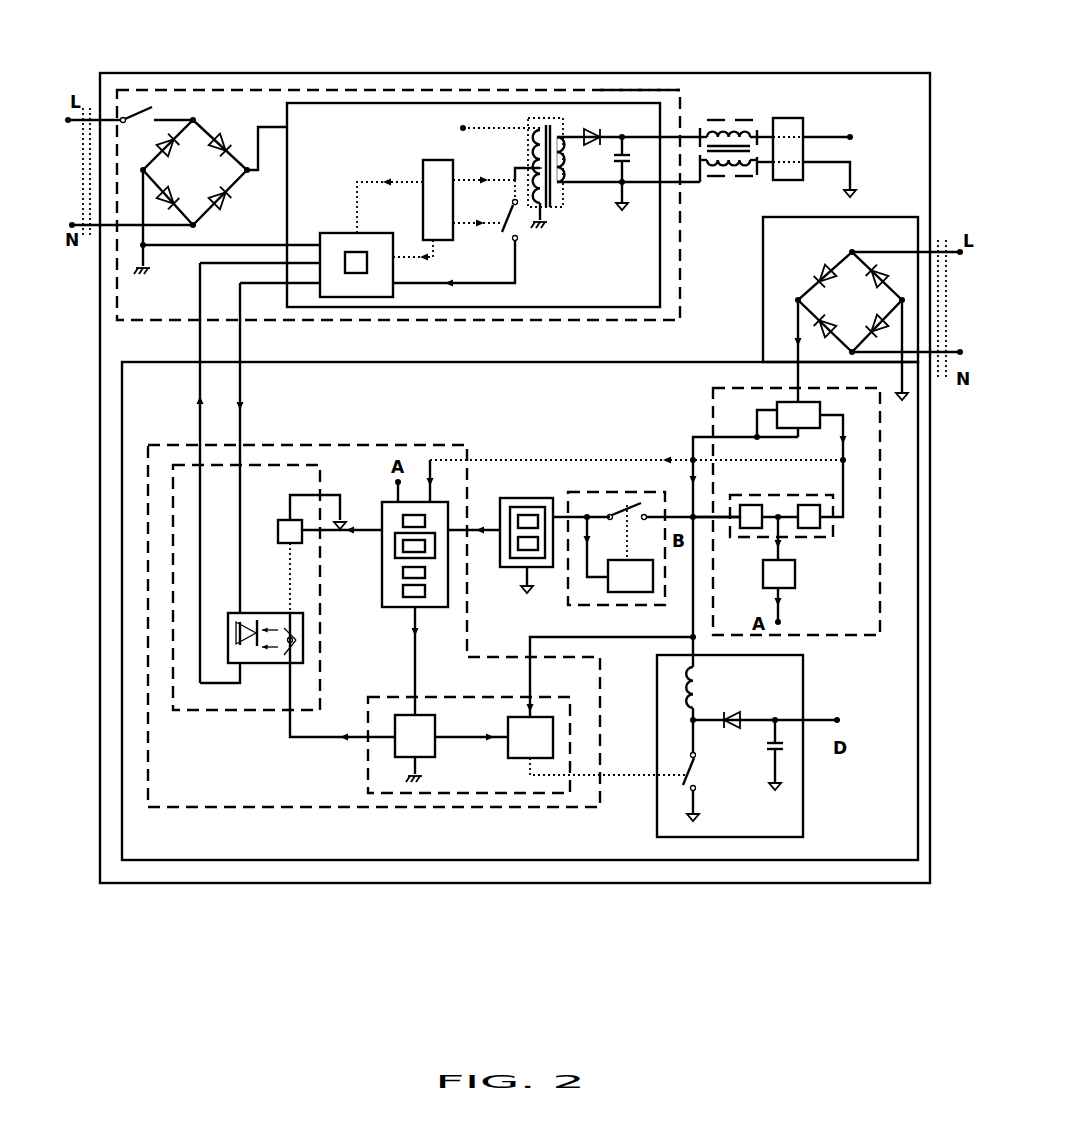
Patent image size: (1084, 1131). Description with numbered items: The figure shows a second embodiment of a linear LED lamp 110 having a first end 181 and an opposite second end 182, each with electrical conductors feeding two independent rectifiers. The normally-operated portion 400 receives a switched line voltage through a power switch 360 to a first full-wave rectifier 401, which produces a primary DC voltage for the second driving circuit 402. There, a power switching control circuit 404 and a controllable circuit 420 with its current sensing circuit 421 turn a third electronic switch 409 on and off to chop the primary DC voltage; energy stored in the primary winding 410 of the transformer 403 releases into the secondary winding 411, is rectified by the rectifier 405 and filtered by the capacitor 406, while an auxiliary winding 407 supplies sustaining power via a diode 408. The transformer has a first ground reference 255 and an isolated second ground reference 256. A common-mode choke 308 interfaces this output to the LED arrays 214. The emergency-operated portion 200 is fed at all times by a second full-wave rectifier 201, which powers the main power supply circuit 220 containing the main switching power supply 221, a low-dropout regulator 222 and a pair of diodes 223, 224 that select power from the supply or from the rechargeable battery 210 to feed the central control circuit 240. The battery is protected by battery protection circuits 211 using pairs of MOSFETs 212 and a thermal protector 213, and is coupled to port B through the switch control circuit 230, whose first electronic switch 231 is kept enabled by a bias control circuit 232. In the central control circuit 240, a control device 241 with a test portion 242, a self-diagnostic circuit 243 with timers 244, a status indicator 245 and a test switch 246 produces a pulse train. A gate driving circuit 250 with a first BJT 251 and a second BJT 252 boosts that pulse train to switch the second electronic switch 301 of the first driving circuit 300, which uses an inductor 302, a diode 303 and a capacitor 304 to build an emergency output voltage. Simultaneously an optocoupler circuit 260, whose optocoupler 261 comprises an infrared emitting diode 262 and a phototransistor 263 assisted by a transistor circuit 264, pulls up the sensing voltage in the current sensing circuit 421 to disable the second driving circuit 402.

The linear LED lamp 110 is at (449, 70).
The first end 181 is at (92, 238).
The second end 182 is at (942, 238).
The emergency-operated portion 200 is at (684, 358).
The second full-wave rectifier 201 is at (858, 246).
The rechargeable battery 210 is at (520, 496).
The battery protection circuits 211 is at (518, 550).
The pairs of MOSFETs 212 is at (538, 507).
The thermal protector 213 is at (532, 556).
The LED arrays 214 is at (804, 118).
The main power supply circuit 220 is at (752, 384).
The main switching power supply 221 is at (822, 402).
The low-dropout regulator 222 is at (797, 590).
The diode 223 is at (815, 530).
The diode 224 is at (748, 504).
The switch control circuit 230 is at (638, 488).
The first electronic switch 231 is at (625, 508).
The bias control circuit 232 is at (612, 594).
The central control circuit 240 is at (362, 443).
The control device 241 is at (388, 606).
The test portion 242 is at (402, 524).
The self-diagnostic circuit 243 is at (398, 548).
The timers 244 is at (418, 596).
The status indicator 245 is at (404, 576).
The test switch 246 is at (414, 640).
The gate driving circuit 250 is at (366, 796).
The first at least one BJT 251 is at (530, 715).
The second at least one BJT 252 is at (430, 714).
The first ground reference 255 is at (145, 272).
The second ground reference 256 is at (625, 212).
The optocoupler circuit 260 is at (186, 714).
The optocoupler 261 is at (262, 668).
The infrared emitting diode 262 is at (298, 648).
The phototransistor 263 is at (250, 612).
The transistor circuit 264 is at (280, 520).
The first driving circuit 300 is at (808, 818).
The second electronic switch 301 is at (684, 782).
The inductor 302 is at (697, 686).
The diode 303 is at (734, 728).
The capacitor 304 is at (782, 748).
The common-mode choke 308 is at (722, 118).
The power switch 360 is at (135, 108).
The normally-operated portion 400 is at (272, 88).
The first full-wave rectifier 401 is at (190, 116).
The second driving circuit 402 is at (643, 92).
The transformer 403 is at (549, 118).
The power switching control circuit 404 is at (437, 158).
The rectifier 405 is at (596, 128).
The capacitor 406 is at (632, 160).
The auxiliary winding 407 is at (543, 205).
The diode 408 is at (480, 178).
The third electronic switch 409 is at (508, 200).
The primary winding 410 is at (537, 116).
The secondary winding 411 is at (563, 165).
The controllable circuit 420 is at (330, 230).
The current sensing circuit 421 is at (348, 274).